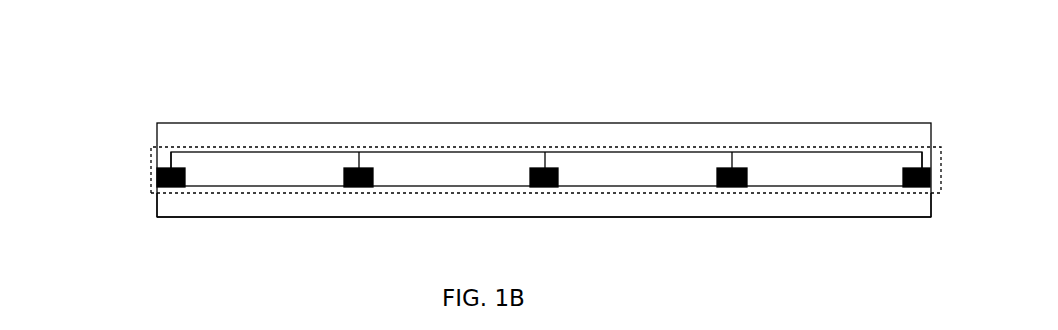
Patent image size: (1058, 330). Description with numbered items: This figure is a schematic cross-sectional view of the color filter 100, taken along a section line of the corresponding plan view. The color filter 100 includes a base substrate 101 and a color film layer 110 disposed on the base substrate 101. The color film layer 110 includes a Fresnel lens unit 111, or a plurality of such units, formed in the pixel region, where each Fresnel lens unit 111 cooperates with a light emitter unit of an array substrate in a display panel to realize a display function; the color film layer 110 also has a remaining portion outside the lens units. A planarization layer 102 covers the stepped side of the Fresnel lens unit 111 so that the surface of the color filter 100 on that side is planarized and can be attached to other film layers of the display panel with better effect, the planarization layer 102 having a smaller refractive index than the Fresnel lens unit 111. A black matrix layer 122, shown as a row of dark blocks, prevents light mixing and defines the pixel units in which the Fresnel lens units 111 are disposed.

The color filter 100 is at (909, 96).
The base substrate 101 is at (170, 205).
The planarization layer 102 is at (170, 142).
The color film layer 110 is at (830, 193).
The Fresnel lens unit 111 is at (430, 168).
The black matrix layer 122 is at (359, 180).